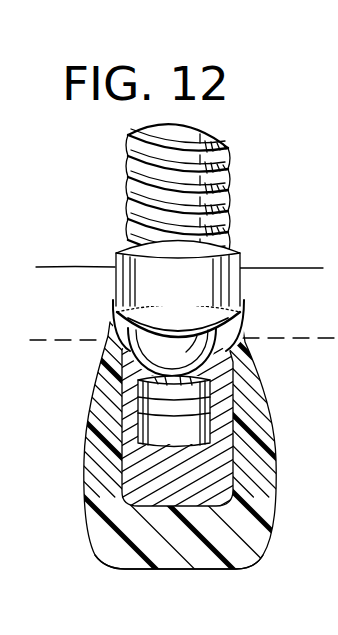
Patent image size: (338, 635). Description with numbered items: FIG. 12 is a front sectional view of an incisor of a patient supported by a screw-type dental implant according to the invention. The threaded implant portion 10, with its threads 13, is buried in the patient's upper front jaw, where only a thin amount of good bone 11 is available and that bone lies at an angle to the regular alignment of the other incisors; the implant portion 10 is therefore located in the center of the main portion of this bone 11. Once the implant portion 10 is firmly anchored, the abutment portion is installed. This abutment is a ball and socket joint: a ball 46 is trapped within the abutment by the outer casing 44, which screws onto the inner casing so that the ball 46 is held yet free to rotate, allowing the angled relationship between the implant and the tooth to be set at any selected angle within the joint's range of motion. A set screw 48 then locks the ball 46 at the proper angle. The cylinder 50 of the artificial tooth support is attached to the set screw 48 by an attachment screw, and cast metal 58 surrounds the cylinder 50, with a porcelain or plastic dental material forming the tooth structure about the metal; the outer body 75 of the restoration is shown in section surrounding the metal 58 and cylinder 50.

The implant portion 10 is at (165, 189).
The bone 11 is at (273, 270).
The threads 13 is at (232, 173).
The outer casing 44 is at (133, 296).
The ball 46 is at (255, 352).
The set screw 48 is at (208, 392).
The cylinder 50 is at (125, 425).
The cast metal 58 is at (228, 460).
The base 75 is at (258, 538).